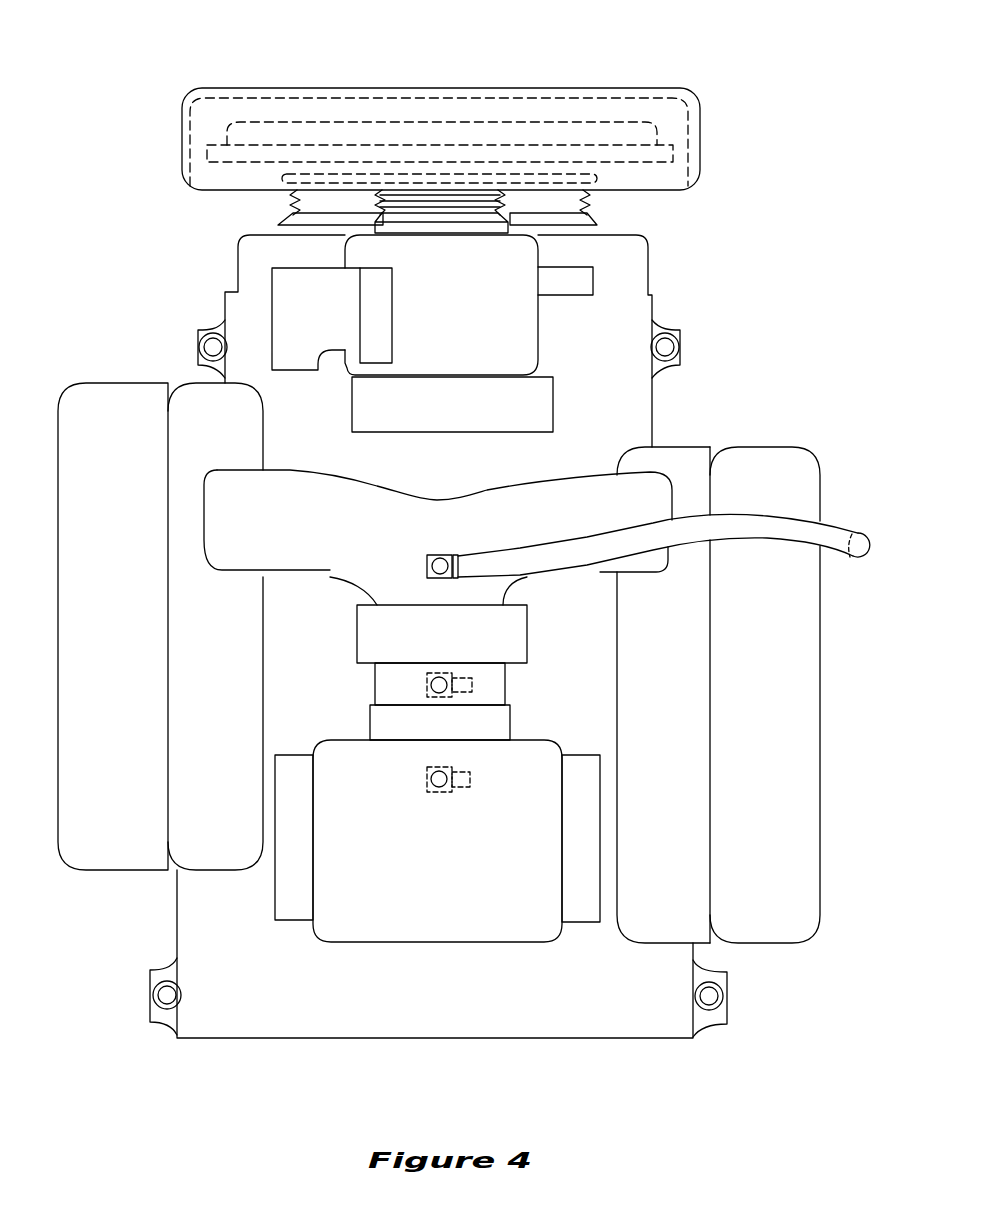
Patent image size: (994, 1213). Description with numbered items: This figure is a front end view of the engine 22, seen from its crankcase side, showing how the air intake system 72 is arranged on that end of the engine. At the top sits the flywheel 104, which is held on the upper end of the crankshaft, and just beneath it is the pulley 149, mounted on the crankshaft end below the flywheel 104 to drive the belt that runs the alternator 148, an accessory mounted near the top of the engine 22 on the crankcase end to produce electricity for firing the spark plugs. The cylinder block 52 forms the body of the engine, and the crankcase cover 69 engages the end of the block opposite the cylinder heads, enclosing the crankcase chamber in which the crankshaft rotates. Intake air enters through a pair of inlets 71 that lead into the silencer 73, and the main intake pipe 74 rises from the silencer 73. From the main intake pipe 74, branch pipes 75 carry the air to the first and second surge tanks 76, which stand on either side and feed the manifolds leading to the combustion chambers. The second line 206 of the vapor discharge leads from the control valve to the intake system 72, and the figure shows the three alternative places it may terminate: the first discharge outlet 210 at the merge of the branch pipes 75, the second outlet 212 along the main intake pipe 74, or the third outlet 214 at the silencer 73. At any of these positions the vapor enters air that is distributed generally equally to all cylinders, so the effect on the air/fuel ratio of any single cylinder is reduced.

The engine 22 is at (738, 253).
The cylinder block 52 is at (238, 280).
The crankcase cover 69 is at (532, 1022).
The inlets 71 is at (273, 900).
The air intake system 72 is at (308, 976).
The silencer 73 is at (405, 943).
The main intake pipe 74 is at (375, 687).
The branch pipes 75 is at (592, 470).
The surge tanks 76 is at (100, 383).
The flywheel 104 is at (604, 120).
The alternator 148 is at (538, 327).
The pulley 149 is at (600, 214).
The second line 206 is at (845, 523).
The first discharge outlet 210 is at (447, 553).
The second outlet 212 is at (441, 693).
The third outlet 214 is at (441, 792).